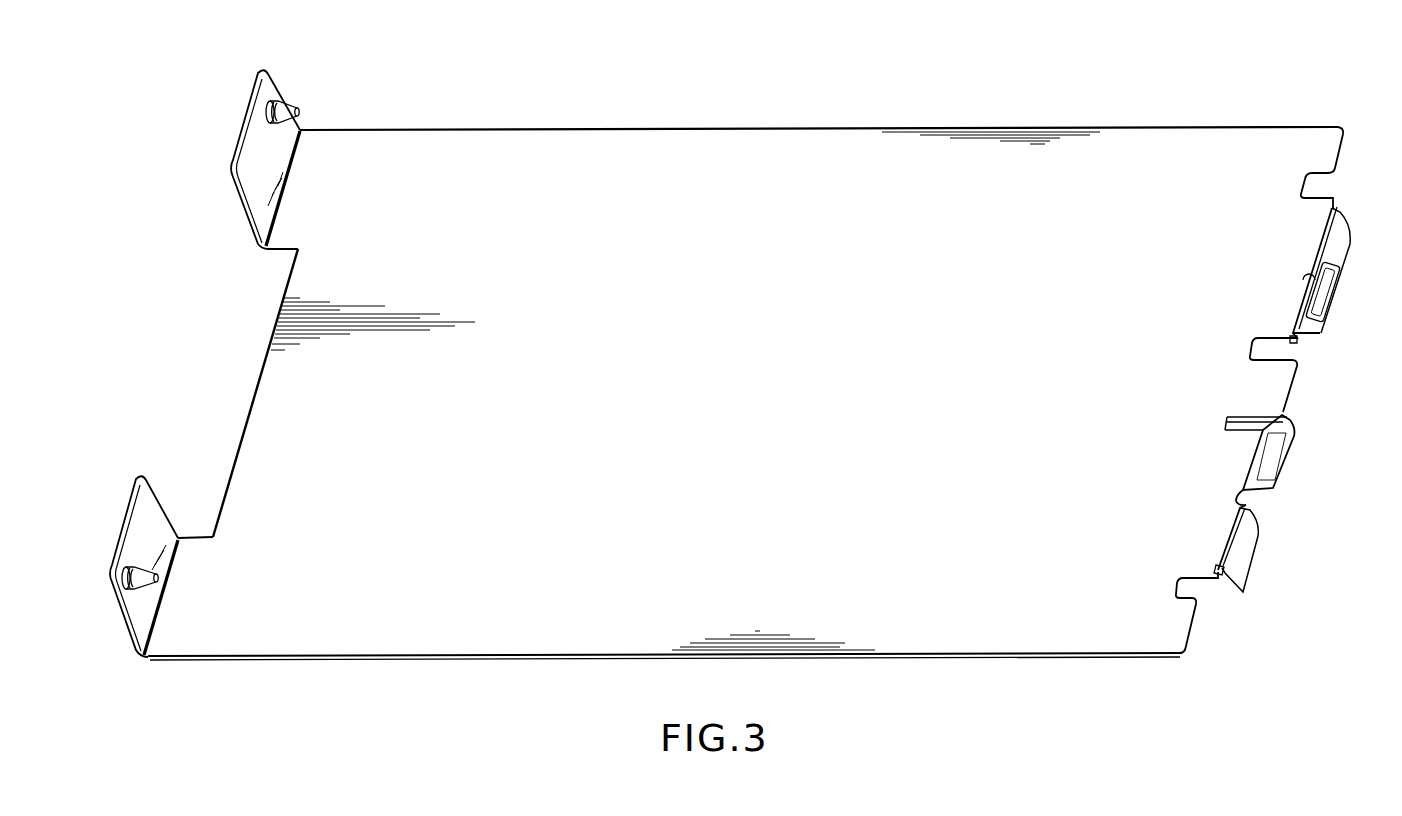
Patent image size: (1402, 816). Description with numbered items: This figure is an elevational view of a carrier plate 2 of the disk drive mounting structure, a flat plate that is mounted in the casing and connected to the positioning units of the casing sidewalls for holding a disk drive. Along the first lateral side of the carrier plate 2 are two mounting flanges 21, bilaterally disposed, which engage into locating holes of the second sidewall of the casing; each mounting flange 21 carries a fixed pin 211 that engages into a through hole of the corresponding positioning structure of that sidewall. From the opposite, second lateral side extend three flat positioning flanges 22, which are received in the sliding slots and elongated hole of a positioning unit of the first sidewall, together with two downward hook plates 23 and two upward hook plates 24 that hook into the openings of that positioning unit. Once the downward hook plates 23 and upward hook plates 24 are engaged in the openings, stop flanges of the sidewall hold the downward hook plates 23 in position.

The carrier plate 2 is at (708, 150).
The mounting flange 21 is at (250, 188).
The fixed pin 211 is at (272, 112).
The flat positioning flange 22 is at (1320, 154).
The downward hook plate 23 is at (1338, 247).
The upward hook plate 24 is at (1323, 303).